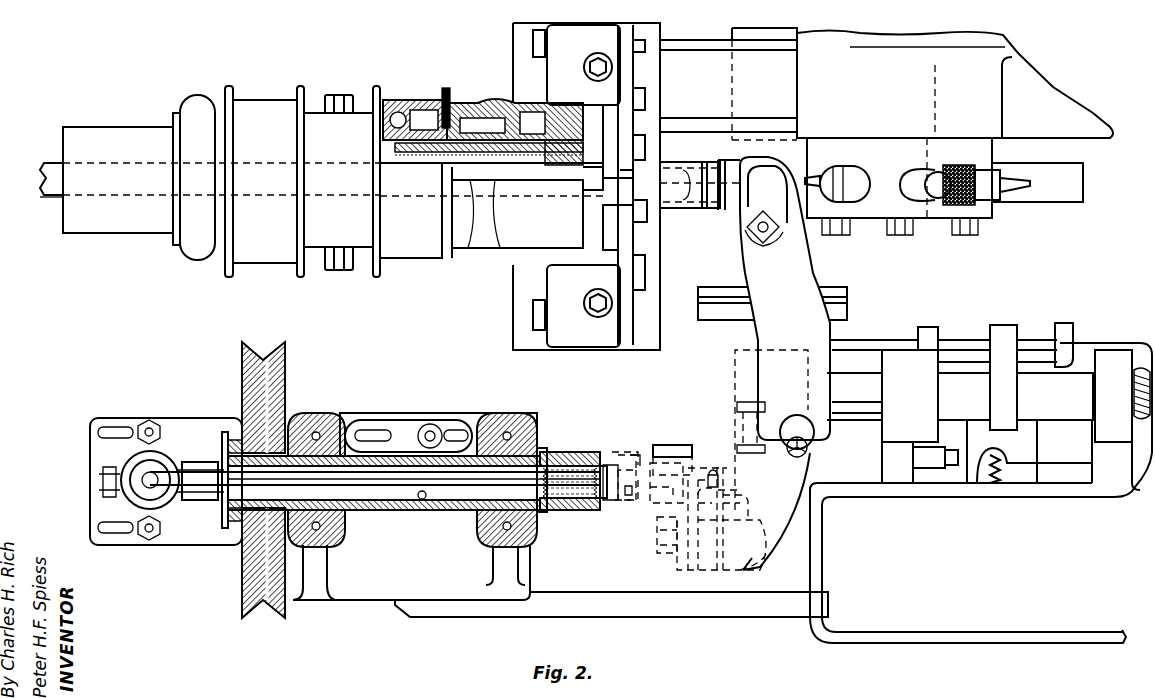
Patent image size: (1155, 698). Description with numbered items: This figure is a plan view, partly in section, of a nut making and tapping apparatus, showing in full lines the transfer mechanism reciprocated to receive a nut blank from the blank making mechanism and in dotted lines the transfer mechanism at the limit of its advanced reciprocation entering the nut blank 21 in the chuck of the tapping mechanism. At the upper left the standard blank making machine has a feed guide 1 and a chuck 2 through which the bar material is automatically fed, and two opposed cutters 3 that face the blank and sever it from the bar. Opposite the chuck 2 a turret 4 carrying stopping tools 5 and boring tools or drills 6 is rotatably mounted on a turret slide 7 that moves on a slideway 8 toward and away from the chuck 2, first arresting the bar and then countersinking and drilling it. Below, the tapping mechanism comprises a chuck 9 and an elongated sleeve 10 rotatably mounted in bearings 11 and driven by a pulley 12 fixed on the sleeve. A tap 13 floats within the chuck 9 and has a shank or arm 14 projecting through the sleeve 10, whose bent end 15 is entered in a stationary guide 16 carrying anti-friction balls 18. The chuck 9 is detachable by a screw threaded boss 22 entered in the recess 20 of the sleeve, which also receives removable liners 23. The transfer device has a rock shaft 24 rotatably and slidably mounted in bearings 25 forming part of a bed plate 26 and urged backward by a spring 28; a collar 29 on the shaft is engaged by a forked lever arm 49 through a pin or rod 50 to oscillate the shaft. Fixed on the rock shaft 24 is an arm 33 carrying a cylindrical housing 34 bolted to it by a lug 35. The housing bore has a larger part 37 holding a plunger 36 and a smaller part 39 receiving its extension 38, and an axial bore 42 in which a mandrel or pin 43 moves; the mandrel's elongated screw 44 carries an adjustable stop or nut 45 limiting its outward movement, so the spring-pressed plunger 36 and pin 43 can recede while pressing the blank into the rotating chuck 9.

The feed guide 1 is at (410, 135).
The chuck 2 is at (530, 110).
The cutters 3 is at (612, 105).
The turret 4 is at (873, 55).
The stopping tools 5 is at (682, 212).
The boring tools or drills 6 is at (822, 175).
The turret slide 7 is at (899, 159).
The slideway 8 is at (712, 42).
The chuck 9 is at (586, 452).
The elongated sleeve 10 is at (385, 450).
The bearings 11 is at (318, 415).
The pulley 12 is at (255, 350).
The tap 13 is at (570, 487).
The shank or arm 14 is at (390, 489).
The bent end 15 is at (150, 490).
The stationary guide 16 is at (128, 452).
The anti-friction ball 18 is at (167, 500).
The recess 20 is at (541, 509).
The nut blank 21 is at (605, 456).
The screw threaded boss 22 is at (546, 455).
The liners 23 is at (423, 499).
The rock shaft 24 is at (1055, 396).
The bearings 25 is at (1007, 396).
The bed plate 26 is at (1030, 500).
The spring 28 is at (1140, 428).
The collar 29 is at (1003, 377).
The arm 33 is at (782, 363).
The cylindrical housing 34 is at (704, 212).
The lug 35 is at (722, 212).
The plunger 36 is at (622, 452).
The larger part of the bore 37 is at (640, 455).
The extension 38 is at (660, 532).
The smaller part of the bore 39 is at (690, 462).
The axial bore 42 is at (625, 502).
The mandrel or pin 43 is at (628, 182).
The elongated screw 44 is at (702, 480).
The adjustable stop or nut 45 is at (718, 487).
The forked lever arm 49 is at (932, 327).
The pin or rod 50 is at (1027, 340).